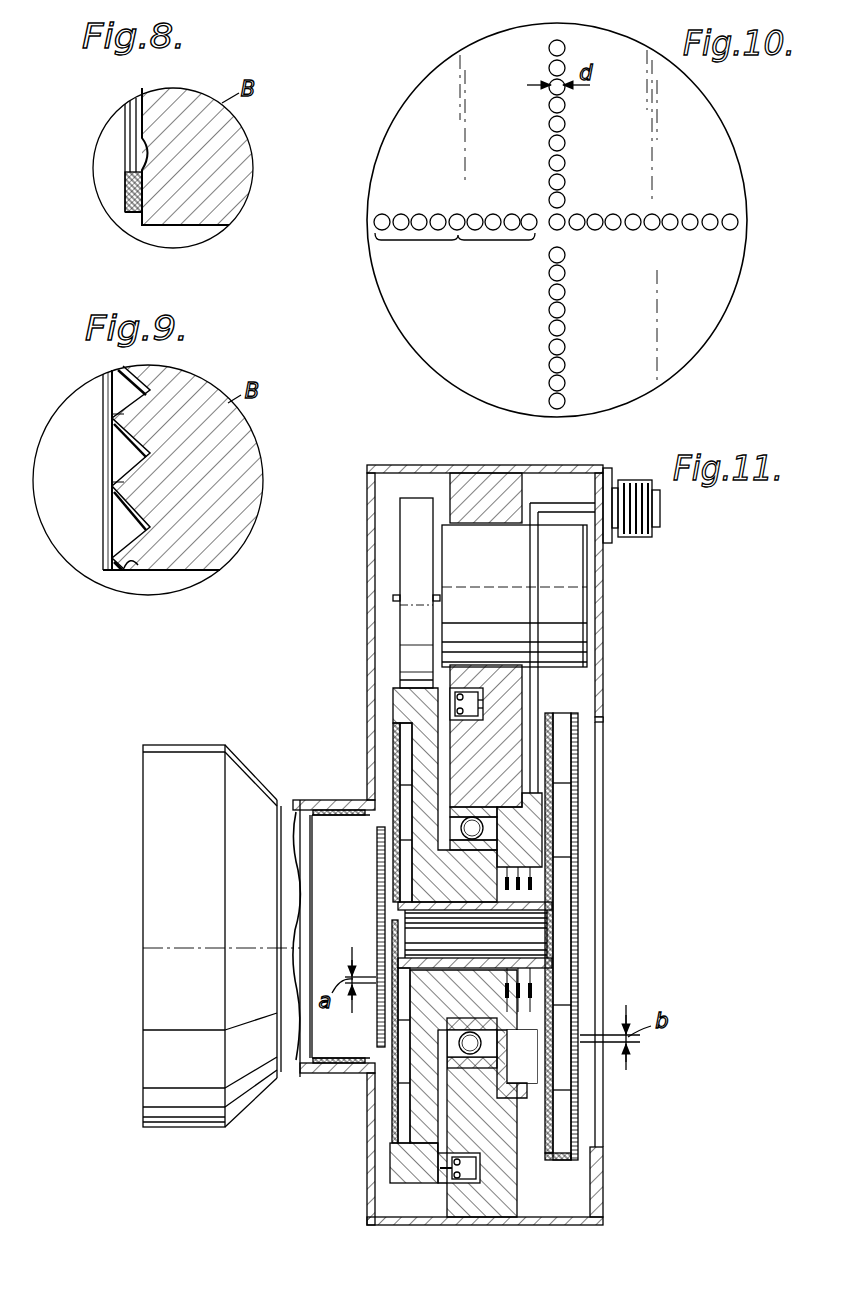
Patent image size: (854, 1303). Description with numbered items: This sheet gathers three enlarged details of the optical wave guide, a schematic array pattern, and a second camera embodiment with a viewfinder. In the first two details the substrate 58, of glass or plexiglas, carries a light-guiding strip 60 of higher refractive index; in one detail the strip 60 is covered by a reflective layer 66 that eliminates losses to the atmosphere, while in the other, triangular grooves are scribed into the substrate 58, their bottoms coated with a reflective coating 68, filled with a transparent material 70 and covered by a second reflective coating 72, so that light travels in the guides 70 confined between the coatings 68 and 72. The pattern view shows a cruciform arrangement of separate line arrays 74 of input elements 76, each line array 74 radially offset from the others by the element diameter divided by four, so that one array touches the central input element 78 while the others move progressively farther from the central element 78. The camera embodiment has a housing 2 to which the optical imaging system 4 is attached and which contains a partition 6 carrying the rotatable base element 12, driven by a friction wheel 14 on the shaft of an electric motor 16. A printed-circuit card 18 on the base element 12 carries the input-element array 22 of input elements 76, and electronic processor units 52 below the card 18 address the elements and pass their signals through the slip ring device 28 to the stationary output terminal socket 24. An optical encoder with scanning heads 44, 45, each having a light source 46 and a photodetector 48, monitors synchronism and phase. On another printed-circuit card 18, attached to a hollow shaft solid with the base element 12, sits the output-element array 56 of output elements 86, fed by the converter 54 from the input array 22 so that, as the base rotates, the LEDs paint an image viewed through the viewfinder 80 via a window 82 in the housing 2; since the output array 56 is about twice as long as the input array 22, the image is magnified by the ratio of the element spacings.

In FIG. 11, the housing 2 is at (375, 555).
In FIG. 11, the optical imaging system 4 is at (243, 783).
In FIG. 11, the partition 6 is at (467, 490).
In FIG. 11, the base element 12 is at (400, 701).
In FIG. 11, the friction wheel 14 is at (413, 498).
In FIG. 11, the electric motor 16 is at (575, 616).
In FIG. 10, the printed-circuit card 18 is at (619, 356).
In FIG. 11, the printed-circuit card 18 is at (402, 761).
In FIG. 10, the input-element array 22 is at (600, 173).
In FIG. 11, the input-element array 22 is at (373, 906).
In FIG. 11, the output terminal socket 24 is at (638, 480).
In FIG. 11, the slip ring device 28 is at (396, 872).
In FIG. 11, the scanning head 44 is at (480, 1166).
In FIG. 11, the scanning head 45 is at (483, 699).
In FIG. 11, the light source 46 is at (456, 1186).
In FIG. 11, the photodetector 48 is at (452, 1169).
In FIG. 11, the electronic processor units 52 is at (398, 748).
In FIG. 11, the converter 54 is at (565, 823).
In FIG. 11, the output-element array 56 is at (600, 917).
In FIG. 8, the substrate 58 is at (237, 165).
In FIG. 9, the substrate 58 is at (243, 470).
In FIG. 8, the light-guiding strip 60 is at (143, 153).
In FIG. 8, the reflective layer 66 is at (128, 196).
In FIG. 9, the reflective coating 68 is at (135, 560).
In FIG. 9, the transparent material 70 is at (119, 455).
In FIG. 9, the second reflective coating 72 is at (106, 533).
In FIG. 10, the line arrays 74 is at (455, 246).
In FIG. 10, the input elements 76 is at (421, 214).
In FIG. 11, the input elements 76 is at (381, 845).
In FIG. 10, the central input element 78 is at (563, 229).
In FIG. 11, the viewfinder 80 is at (625, 873).
In FIG. 11, the window 82 is at (600, 722).
In FIG. 11, the output elements 86 is at (588, 983).